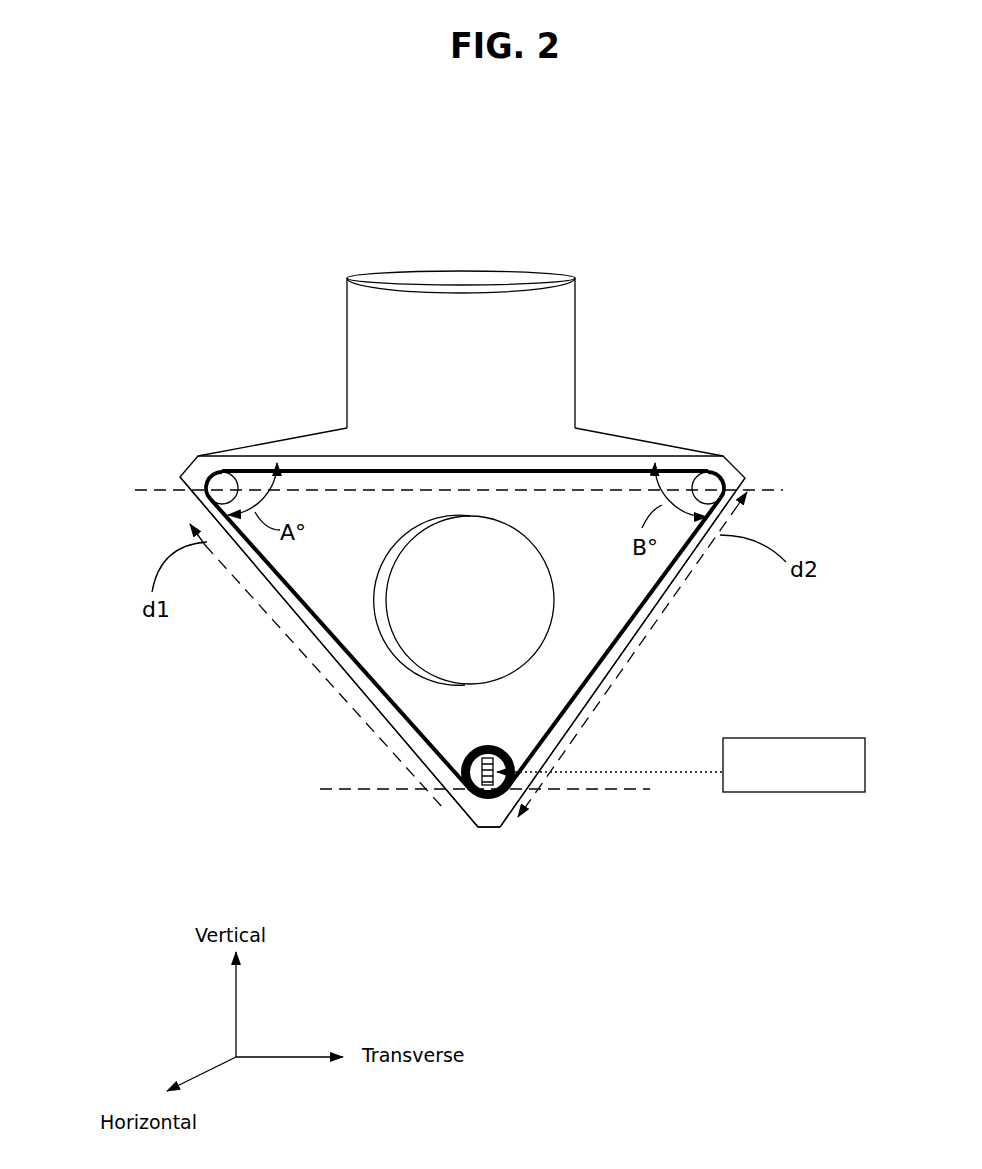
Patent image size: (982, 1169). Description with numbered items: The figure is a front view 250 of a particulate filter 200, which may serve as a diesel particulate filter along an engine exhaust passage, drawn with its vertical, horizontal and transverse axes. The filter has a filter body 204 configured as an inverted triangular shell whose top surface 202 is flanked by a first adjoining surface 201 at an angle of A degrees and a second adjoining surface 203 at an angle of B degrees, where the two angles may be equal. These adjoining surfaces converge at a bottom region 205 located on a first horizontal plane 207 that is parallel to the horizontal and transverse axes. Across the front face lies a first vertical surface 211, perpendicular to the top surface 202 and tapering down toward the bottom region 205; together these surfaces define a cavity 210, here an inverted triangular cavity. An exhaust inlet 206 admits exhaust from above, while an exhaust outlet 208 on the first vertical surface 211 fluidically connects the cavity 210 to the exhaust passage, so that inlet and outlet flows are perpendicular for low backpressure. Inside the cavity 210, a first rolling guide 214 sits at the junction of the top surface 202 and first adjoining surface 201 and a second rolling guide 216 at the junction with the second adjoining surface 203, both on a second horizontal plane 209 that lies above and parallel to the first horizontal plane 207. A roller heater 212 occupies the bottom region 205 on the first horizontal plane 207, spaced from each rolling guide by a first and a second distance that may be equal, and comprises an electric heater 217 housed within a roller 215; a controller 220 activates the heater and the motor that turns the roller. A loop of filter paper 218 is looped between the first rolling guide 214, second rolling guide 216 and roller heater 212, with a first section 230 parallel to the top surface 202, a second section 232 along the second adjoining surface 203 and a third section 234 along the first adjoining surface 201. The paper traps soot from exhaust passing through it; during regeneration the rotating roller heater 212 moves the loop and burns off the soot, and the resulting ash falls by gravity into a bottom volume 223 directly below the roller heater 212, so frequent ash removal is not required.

The front view 250 is at (178, 206).
The particulate filter 200 is at (188, 274).
The exhaust inlet 206 is at (379, 277).
The top surface 202 is at (612, 428).
The first section of the loop of filter paper 230 is at (531, 472).
The third section of the loop of filter paper 234 is at (300, 604).
The loop of filter paper 218 is at (648, 602).
The second section of the loop of filter paper 232 is at (602, 663).
The first rolling guide 214 is at (221, 486).
The second rolling guide 216 is at (710, 486).
The first vertical surface 211 is at (322, 501).
The second horizontal plane 209 is at (136, 489).
The first horizontal plane 207 is at (398, 788).
The cavity 210 is at (487, 597).
The exhaust outlet 208 is at (407, 545).
The first adjoining surface 201 is at (343, 669).
The second adjoining surface 203 is at (633, 635).
The filter body 204 is at (156, 647).
The roller 215 is at (488, 746).
The electric heater 217 is at (496, 748).
The roller heater 212 is at (503, 817).
The bottom volume 223 is at (462, 826).
The bottom region 205 is at (492, 844).
The controller 220 is at (812, 781).